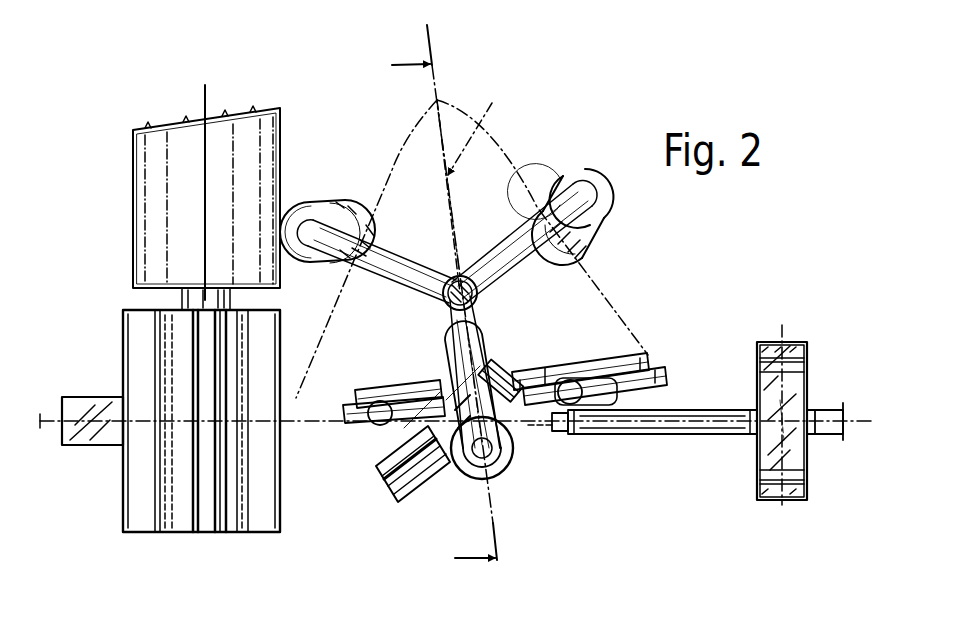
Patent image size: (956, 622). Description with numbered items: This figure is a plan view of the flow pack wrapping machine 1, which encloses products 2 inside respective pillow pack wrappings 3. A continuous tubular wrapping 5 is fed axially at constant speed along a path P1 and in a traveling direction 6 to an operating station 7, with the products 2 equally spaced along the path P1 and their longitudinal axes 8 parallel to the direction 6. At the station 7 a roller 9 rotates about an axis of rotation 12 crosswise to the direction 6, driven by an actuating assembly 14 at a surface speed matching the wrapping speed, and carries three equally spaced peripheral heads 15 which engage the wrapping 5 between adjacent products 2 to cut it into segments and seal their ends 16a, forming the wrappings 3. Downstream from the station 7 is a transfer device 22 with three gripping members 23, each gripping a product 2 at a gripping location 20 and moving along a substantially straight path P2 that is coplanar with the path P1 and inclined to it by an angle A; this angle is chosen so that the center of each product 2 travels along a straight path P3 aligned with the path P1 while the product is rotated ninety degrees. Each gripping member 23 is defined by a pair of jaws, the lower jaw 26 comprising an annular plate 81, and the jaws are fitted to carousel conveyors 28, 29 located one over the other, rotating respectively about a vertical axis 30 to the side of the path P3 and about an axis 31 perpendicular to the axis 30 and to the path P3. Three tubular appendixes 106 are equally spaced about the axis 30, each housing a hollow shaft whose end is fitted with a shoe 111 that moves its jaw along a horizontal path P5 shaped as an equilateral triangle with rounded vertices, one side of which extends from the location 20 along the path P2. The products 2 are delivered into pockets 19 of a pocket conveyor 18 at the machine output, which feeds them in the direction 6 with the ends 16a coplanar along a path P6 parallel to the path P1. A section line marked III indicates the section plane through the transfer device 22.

The wrapping machine 1 is at (343, 115).
The actuating assembly 14 is at (133, 212).
The operating station 7 is at (115, 395).
The peripheral heads 15 is at (135, 518).
The roller 9 is at (175, 533).
The axis of rotation 12 is at (205, 533).
The continuous tubular wrapping 5 is at (95, 450).
The traveling direction 6 is at (48, 415).
The path P1 is at (82, 395).
The section line III- III is at (590, 292).
The transfer device 22 is at (560, 150).
The carousel conveyor 28 is at (508, 210).
The axis 31 is at (479, 124).
The vertical axis 30 is at (467, 230).
The ends of wrappings 16a is at (455, 332).
The shoe 111 is at (383, 234).
The tubular appendixes 106 is at (314, 202).
The gripping location 20 is at (310, 413).
The jaw 26 is at (368, 432).
The annular plate 81 is at (376, 398).
The path P2 is at (403, 382).
The gripping members 23 is at (514, 450).
The products 2 is at (376, 455).
The pillow pack wrappings 3 is at (436, 496).
The longitudinal axes 8 is at (512, 368).
The carousel conveyor 29 is at (535, 362).
The pocket conveyor 18 is at (700, 410).
The pockets 19 is at (762, 420).
The path P6 is at (868, 421).
The horizontal path P5 is at (603, 290).
The straight path P3 is at (528, 422).
The angle A is at (552, 440).